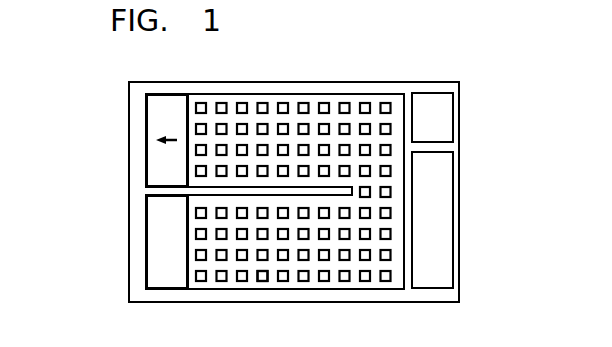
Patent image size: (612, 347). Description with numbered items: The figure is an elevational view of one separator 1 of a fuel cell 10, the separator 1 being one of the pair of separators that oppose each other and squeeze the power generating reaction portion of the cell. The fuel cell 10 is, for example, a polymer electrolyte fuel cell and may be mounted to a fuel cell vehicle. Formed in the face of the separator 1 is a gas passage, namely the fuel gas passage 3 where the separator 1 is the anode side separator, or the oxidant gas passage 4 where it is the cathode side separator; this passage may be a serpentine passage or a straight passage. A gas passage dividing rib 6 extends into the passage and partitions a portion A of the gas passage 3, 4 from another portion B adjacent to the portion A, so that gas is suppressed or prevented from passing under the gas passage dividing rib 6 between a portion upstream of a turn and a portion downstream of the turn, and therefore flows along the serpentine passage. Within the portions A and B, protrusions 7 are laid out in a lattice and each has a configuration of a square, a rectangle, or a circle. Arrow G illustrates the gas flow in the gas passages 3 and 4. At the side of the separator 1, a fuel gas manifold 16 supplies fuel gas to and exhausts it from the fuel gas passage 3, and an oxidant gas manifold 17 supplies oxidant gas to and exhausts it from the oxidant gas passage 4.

The separator 1 is at (316, 81).
The fuel gas passage 3 is at (311, 307).
The oxidant gas passage 4 is at (272, 279).
The gas passage dividing rib 6 is at (205, 192).
The protrusion 7 is at (221, 128).
The fuel cell 10 is at (477, 72).
The fuel gas manifold 16 is at (291, 190).
The oxidant gas manifold 17 is at (153, 180).
The portion of the gas passage A is at (253, 266).
The portion of the gas passage B is at (272, 118).
The arrow illustrating gas flow G is at (381, 226).